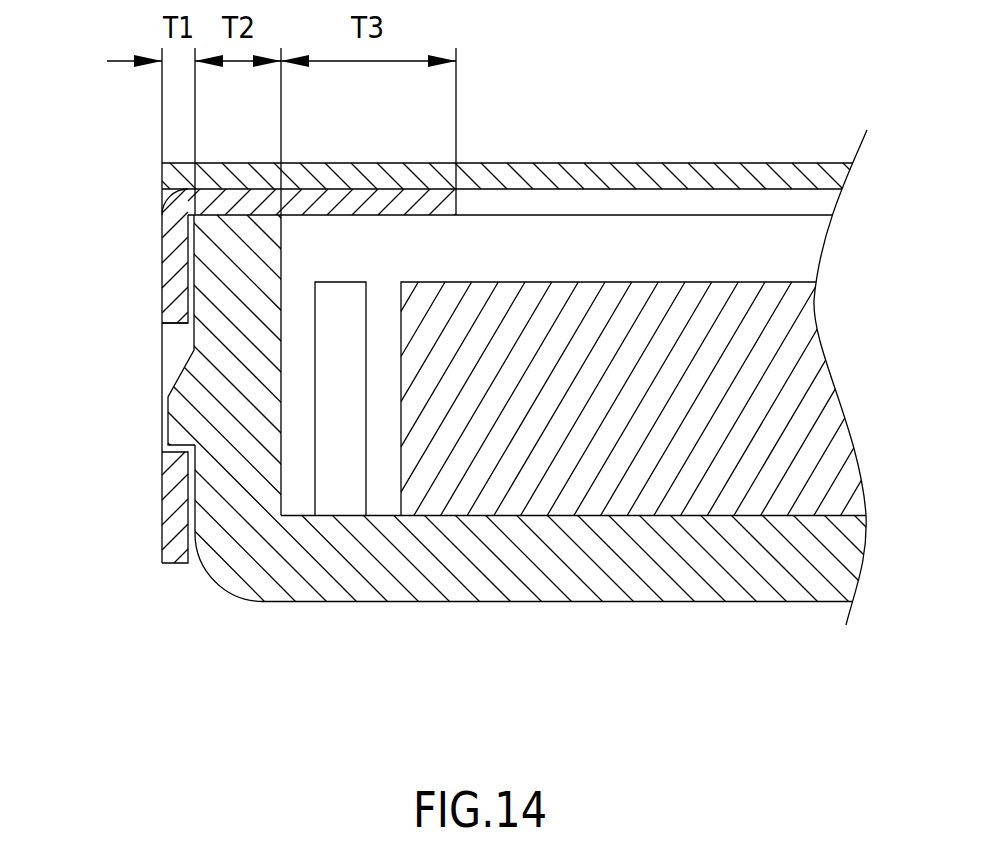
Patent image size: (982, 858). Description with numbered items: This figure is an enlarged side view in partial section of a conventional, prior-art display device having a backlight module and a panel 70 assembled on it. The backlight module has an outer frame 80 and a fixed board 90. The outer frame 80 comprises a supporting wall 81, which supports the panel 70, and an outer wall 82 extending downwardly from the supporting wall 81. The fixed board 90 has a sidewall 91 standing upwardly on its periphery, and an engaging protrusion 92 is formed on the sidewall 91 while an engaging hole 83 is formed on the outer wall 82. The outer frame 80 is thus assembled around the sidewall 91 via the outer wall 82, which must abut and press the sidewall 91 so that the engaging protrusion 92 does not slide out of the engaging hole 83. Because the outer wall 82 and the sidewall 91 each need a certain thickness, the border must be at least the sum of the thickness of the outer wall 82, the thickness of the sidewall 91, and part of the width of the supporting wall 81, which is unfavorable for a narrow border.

The panel 70 is at (603, 177).
The outer frame 80 is at (285, 259).
The supporting wall 81 is at (405, 203).
The outer wall 82 is at (175, 292).
The engaging hole 83 is at (177, 323).
The fixed board 90 is at (474, 454).
The sidewall 91 is at (217, 475).
The engaging protrusion 92 is at (185, 410).